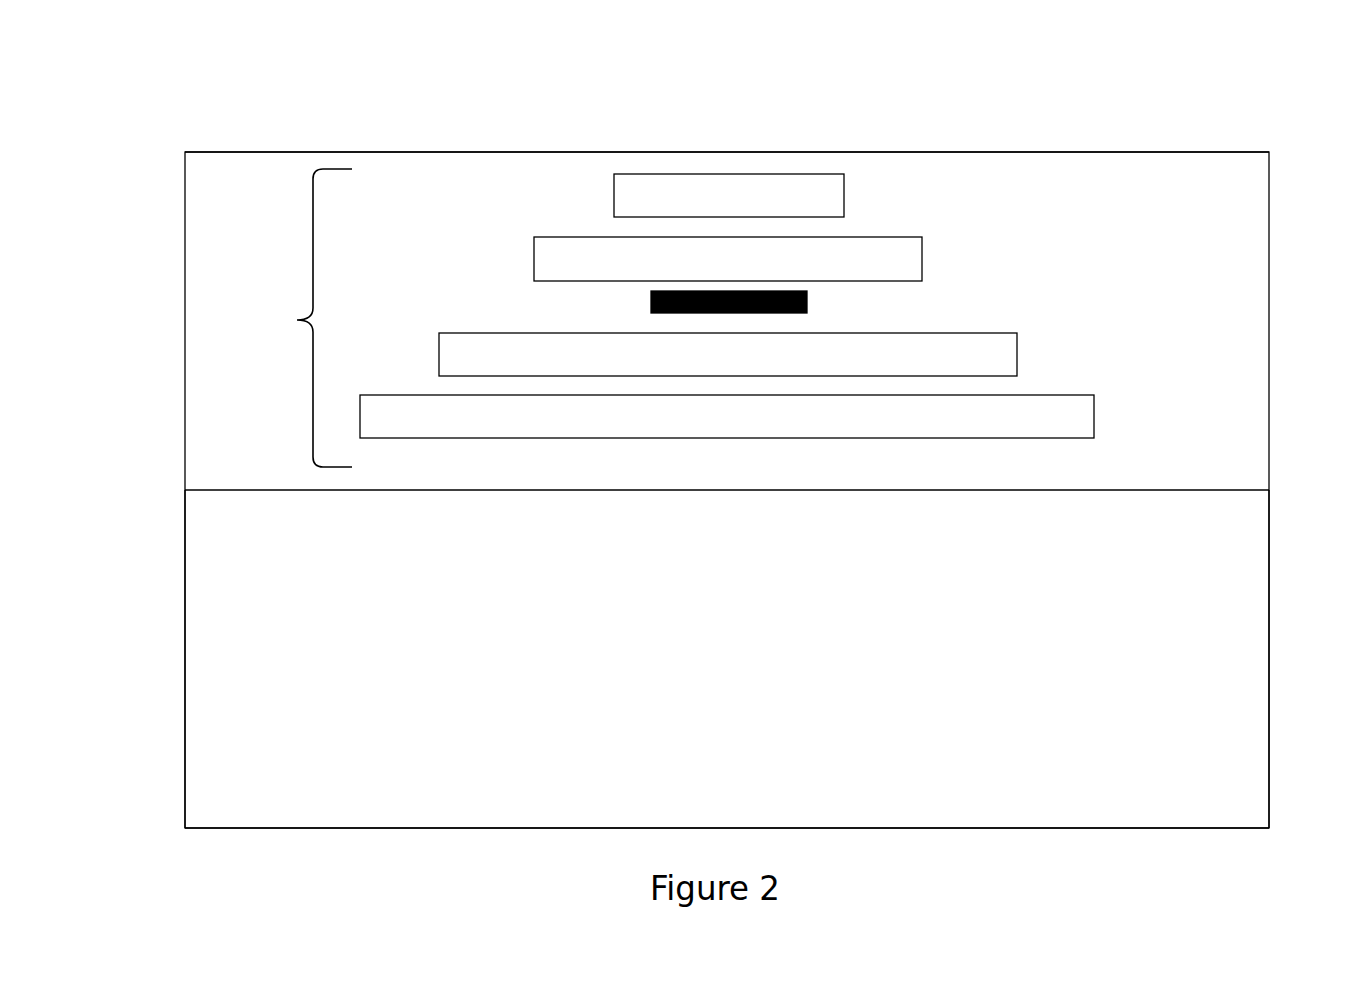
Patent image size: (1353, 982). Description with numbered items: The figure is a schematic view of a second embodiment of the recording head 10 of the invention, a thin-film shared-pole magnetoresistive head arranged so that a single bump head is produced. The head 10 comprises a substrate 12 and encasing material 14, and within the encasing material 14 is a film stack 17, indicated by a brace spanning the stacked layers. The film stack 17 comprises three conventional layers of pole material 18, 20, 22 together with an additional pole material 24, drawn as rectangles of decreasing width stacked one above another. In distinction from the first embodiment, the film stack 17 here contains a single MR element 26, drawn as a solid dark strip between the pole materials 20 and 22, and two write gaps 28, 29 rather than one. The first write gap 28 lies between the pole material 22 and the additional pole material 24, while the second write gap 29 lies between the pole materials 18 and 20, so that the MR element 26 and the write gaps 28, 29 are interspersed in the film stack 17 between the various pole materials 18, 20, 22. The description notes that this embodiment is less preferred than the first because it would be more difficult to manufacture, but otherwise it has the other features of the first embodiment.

The head 10 is at (1210, 106).
The substrate 12 is at (1266, 700).
The encasing material 14 is at (1242, 152).
The film stack 17 is at (305, 318).
The pole material 18 is at (1008, 417).
The pole material 20 is at (958, 353).
The pole material 22 is at (873, 258).
The additional pole material 24 is at (826, 195).
The MR element 26 is at (807, 302).
The write gap 28 is at (826, 225).
The write gap 29 is at (927, 384).